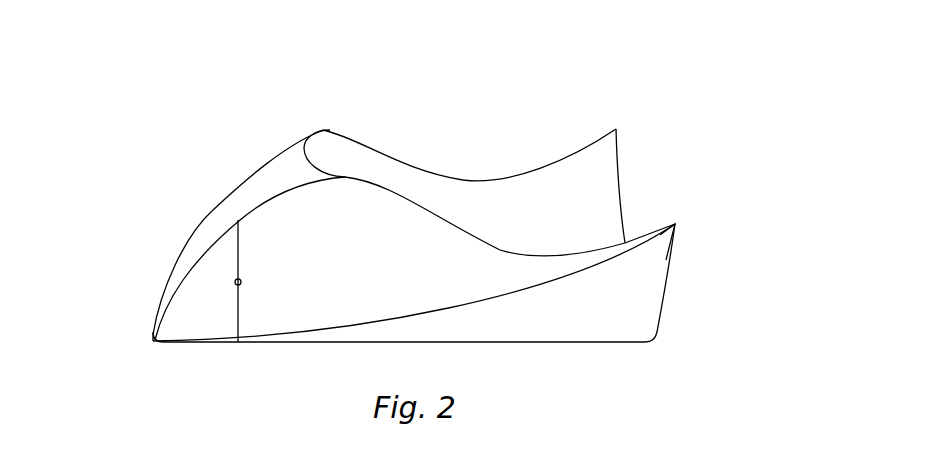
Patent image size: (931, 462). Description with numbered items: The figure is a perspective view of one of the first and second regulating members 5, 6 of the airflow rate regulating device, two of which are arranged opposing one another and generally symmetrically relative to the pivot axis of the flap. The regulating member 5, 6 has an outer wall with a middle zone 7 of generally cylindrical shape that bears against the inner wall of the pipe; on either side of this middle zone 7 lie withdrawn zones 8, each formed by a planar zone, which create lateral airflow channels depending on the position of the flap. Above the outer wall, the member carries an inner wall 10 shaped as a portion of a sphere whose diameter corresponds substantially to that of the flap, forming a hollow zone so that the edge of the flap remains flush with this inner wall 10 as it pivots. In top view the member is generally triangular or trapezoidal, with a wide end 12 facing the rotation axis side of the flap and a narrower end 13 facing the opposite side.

The first regulating member 5 is at (204, 209).
The second regulating member 6 is at (204, 209).
The middle zone 7 is at (587, 315).
The withdrawn zone 8 is at (310, 290).
The inner wall 10 is at (547, 213).
The wide end 12 is at (697, 242).
The narrower end 13 is at (167, 205).